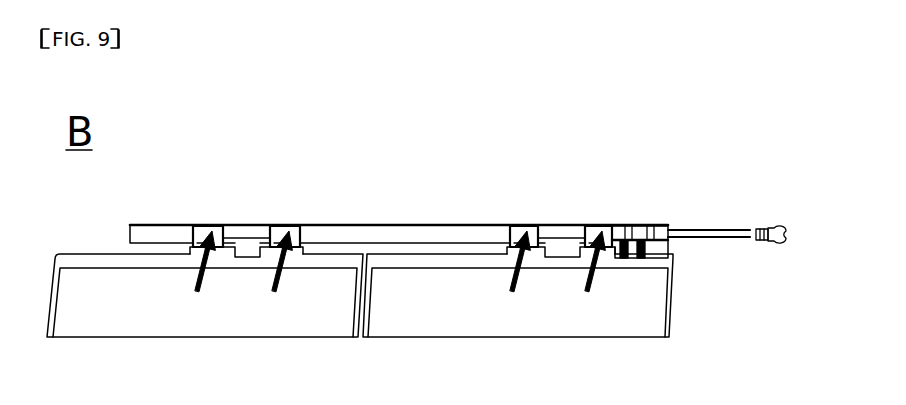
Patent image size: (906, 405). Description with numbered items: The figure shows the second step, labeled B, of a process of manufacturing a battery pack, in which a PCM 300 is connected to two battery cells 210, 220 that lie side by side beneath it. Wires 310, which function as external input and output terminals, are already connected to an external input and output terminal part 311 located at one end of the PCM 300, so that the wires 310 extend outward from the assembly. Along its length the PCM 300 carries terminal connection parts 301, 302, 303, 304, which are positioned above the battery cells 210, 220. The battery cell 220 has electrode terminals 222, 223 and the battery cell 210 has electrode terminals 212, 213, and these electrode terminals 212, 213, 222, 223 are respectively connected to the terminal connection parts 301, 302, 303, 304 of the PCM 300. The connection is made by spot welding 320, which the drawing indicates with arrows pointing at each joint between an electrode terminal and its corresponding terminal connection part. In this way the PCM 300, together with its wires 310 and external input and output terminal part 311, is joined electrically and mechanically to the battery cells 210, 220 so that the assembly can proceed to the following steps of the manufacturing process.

The PCM 300 is at (130, 235).
The terminal connection part 301 is at (224, 225).
The terminal connection part 302 is at (299, 225).
The terminal connection part 303 is at (538, 225).
The terminal connection part 304 is at (612, 225).
The electrode terminal 223 is at (207, 225).
The electrode terminal 222 is at (290, 225).
The electrode terminal 213 is at (521, 225).
The electrode terminal 212 is at (602, 225).
The external input and output terminal part 311 is at (650, 225).
The wires 310 is at (660, 252).
The spot welding 320 is at (588, 289).
The battery cell 220 is at (110, 331).
The battery cell 210 is at (506, 331).